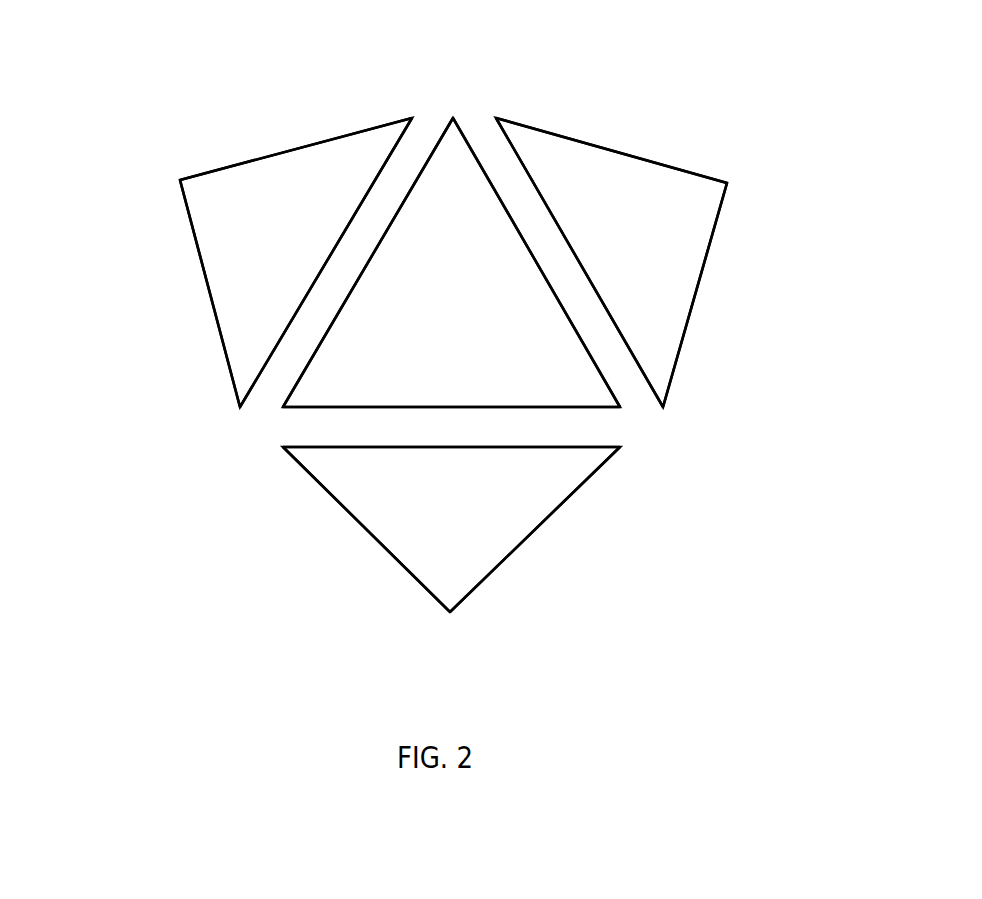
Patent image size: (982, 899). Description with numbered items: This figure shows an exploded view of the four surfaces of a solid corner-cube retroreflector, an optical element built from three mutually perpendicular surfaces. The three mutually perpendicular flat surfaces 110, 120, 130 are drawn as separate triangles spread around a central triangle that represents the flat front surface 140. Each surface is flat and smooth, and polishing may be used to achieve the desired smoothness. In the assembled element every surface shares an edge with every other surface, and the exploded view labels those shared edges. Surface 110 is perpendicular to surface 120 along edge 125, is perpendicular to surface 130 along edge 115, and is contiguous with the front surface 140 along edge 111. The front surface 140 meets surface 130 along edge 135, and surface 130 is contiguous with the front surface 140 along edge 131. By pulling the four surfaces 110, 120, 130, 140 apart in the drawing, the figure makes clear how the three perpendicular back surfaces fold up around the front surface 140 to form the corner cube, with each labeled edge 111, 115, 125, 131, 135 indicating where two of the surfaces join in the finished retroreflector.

The flat surface 110 is at (677, 222).
The edge 111 is at (280, 338).
The edge 115 is at (700, 287).
The flat surface 120 is at (257, 230).
The edge 125 is at (337, 137).
The flat surface 130 is at (437, 552).
The edge 131 is at (588, 408).
The edge 135 is at (185, 209).
The flat front surface 140 is at (452, 242).